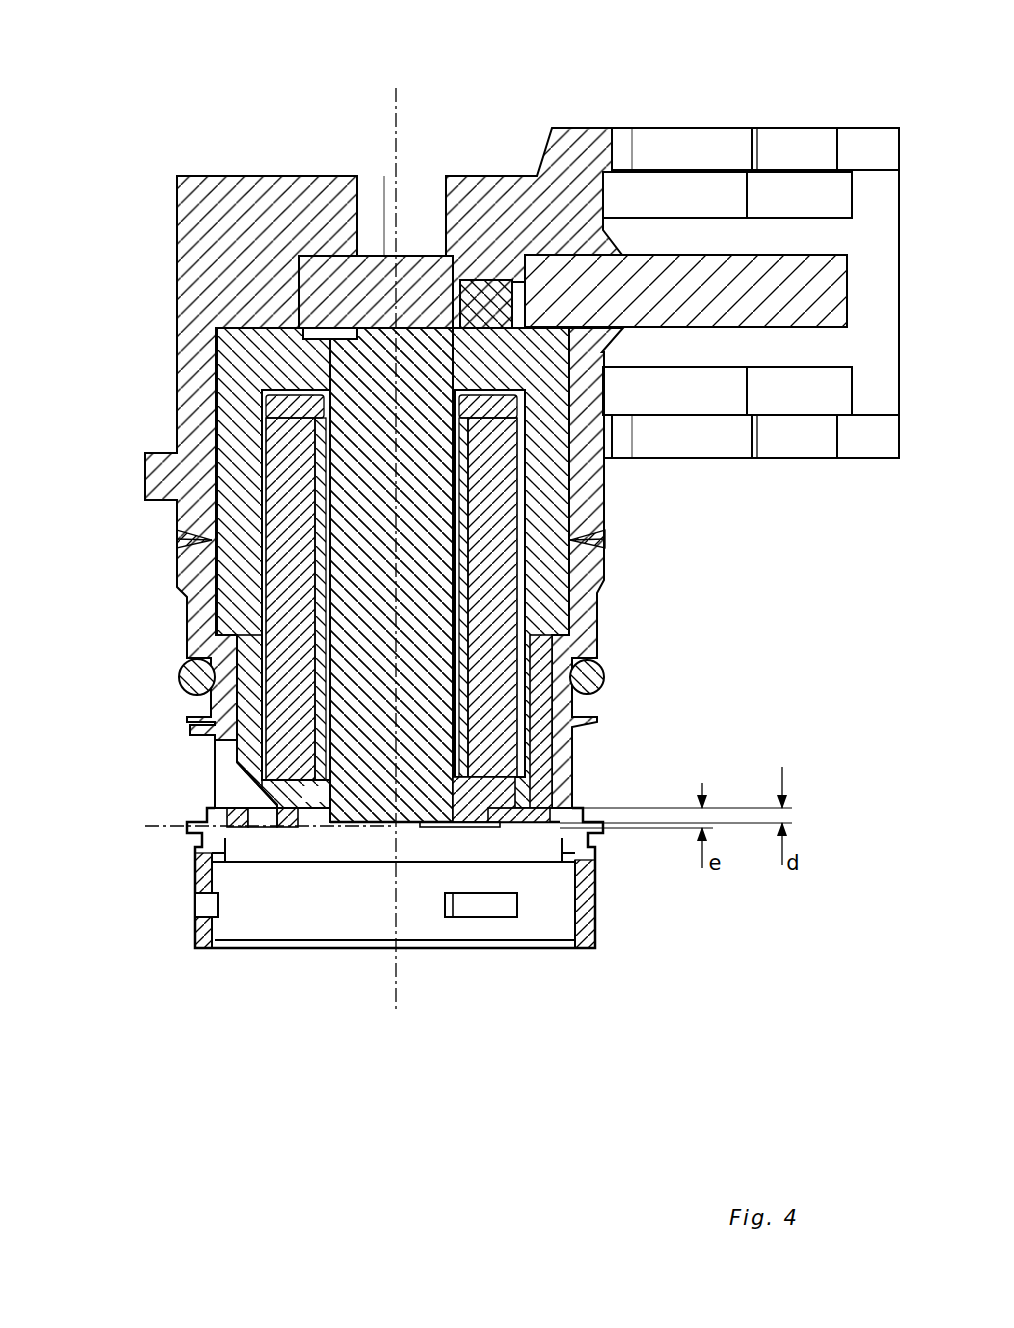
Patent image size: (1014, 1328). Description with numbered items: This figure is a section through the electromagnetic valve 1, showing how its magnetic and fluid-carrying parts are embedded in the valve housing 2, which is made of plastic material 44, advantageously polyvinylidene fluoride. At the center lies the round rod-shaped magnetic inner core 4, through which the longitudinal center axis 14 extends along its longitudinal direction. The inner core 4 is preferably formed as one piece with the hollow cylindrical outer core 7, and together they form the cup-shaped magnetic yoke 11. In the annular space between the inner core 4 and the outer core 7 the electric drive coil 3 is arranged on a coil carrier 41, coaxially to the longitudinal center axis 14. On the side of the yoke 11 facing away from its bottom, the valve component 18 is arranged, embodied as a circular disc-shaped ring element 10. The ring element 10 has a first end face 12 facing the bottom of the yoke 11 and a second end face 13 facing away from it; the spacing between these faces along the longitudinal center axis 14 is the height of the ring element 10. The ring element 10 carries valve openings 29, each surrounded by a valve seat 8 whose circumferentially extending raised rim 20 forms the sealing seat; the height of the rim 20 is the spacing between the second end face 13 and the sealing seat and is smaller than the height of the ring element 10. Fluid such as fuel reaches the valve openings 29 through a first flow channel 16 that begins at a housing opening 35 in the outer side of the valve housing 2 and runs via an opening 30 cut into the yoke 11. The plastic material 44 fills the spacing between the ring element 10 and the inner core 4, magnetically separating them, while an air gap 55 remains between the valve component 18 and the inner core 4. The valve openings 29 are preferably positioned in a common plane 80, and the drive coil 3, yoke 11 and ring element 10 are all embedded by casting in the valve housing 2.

The electromagnetic valve 1 is at (163, 152).
The valve housing 2 is at (193, 318).
The electric drive coil 3 is at (287, 442).
The magnetic inner core 4 is at (410, 515).
The outer core 7 is at (246, 652).
The valve seat 8 is at (242, 832).
The ring element 10 is at (513, 818).
The magnetic yoke 11 is at (244, 487).
The first end face 12 is at (522, 800).
The second end face 13 is at (545, 820).
The longitudinal center axis 14 is at (403, 155).
The first flow channel 16 is at (225, 797).
The valve component 18 is at (518, 824).
The rim 20 is at (243, 827).
The valve opening 29 is at (263, 818).
The opening 30 is at (240, 780).
The housing opening 35 is at (212, 742).
The coil carrier 41 is at (473, 652).
The plastic material 44 is at (330, 805).
The air gap 55 is at (318, 826).
The common plane 80 is at (235, 823).